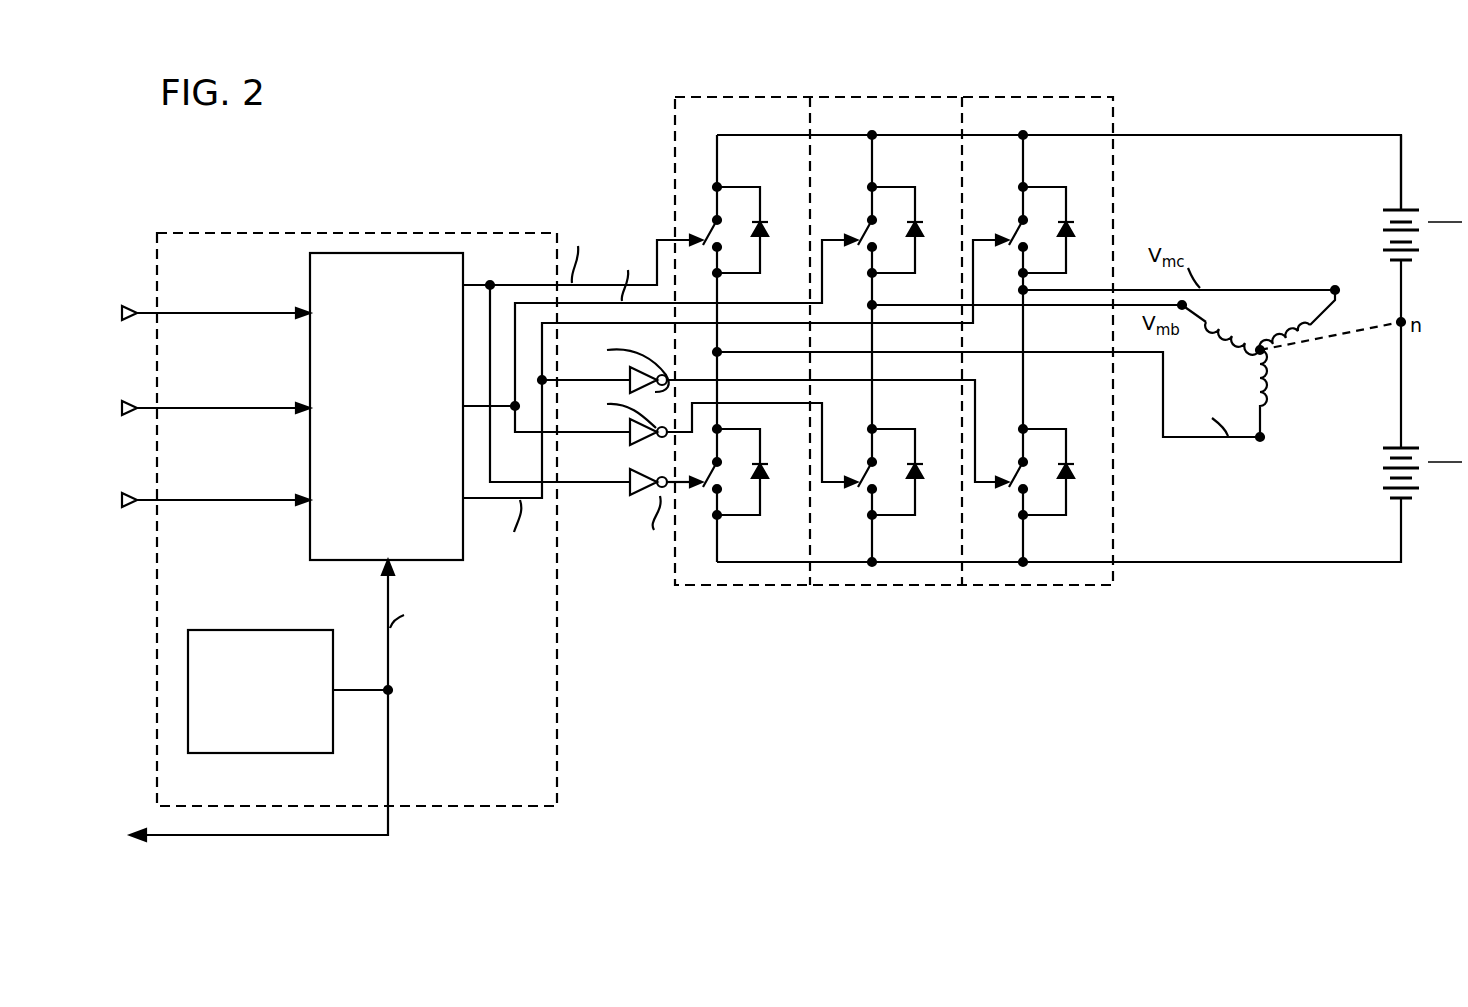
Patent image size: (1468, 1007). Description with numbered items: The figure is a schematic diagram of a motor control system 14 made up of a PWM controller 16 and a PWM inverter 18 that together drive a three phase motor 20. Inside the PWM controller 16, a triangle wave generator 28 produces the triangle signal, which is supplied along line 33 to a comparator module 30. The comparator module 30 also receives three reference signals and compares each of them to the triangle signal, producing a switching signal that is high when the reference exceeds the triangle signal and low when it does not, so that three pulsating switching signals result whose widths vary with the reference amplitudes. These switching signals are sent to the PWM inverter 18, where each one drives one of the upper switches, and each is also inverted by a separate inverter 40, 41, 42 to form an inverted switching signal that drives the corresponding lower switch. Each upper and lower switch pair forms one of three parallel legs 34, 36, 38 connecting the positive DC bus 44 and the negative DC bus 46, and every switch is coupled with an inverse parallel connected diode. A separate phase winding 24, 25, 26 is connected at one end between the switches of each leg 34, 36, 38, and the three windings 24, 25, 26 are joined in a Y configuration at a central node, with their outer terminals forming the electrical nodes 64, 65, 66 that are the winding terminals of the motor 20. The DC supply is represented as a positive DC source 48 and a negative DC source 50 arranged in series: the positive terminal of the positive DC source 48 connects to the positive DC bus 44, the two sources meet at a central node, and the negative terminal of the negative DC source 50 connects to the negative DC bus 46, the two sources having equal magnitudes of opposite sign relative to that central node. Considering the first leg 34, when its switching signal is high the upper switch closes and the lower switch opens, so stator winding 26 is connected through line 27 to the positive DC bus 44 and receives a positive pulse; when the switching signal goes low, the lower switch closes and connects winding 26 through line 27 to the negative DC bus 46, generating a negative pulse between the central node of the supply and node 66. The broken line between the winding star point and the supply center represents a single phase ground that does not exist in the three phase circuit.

The motor control system 14 is at (342, 204).
The PWM controller 16 is at (558, 678).
The PWM inverter 18 is at (1118, 577).
The motor 20 is at (1248, 280).
The winding 24 is at (1234, 343).
The winding 25 is at (1306, 324).
The stator winding 26 is at (1262, 392).
The line 27 is at (1208, 442).
The triangle wave generator 28 is at (246, 747).
The comparator module 30 is at (370, 421).
The line 33 is at (380, 596).
The leg 34 is at (778, 548).
The leg 36 is at (932, 548).
The leg 38 is at (1072, 548).
The inverter 40 is at (672, 390).
The inverter 41 is at (628, 440).
The inverter 42 is at (628, 490).
The positive DC bus 44 is at (1322, 133).
The negative DC bus 46 is at (1300, 566).
The positive DC source 48 is at (1384, 222).
The negative DC source 50 is at (1384, 468).
The node 64 is at (1192, 305).
The node 65 is at (1337, 286).
The node 66 is at (1264, 442).